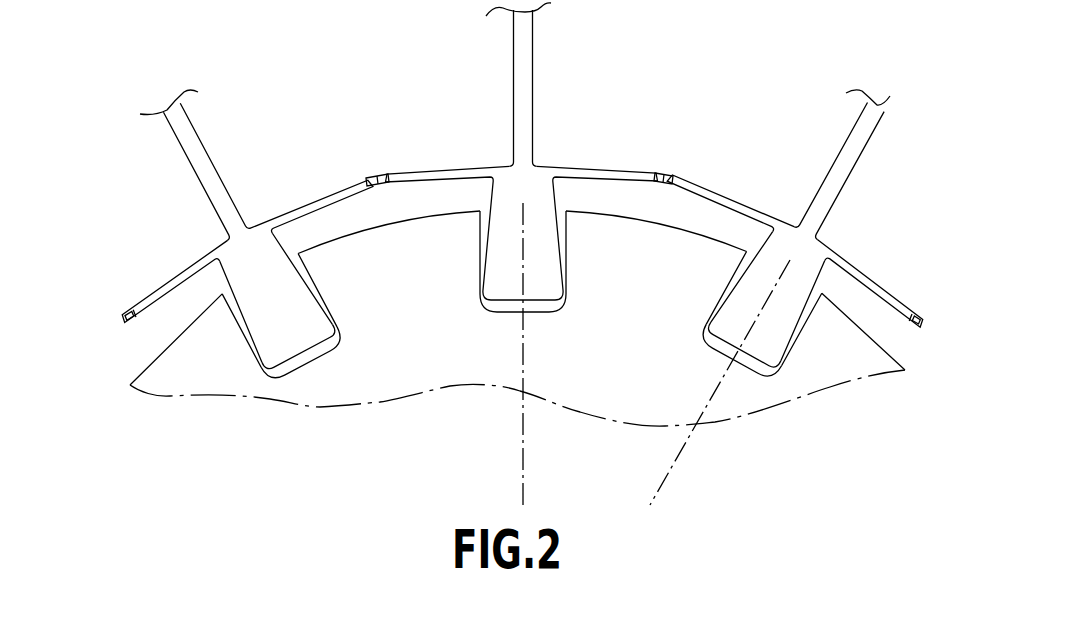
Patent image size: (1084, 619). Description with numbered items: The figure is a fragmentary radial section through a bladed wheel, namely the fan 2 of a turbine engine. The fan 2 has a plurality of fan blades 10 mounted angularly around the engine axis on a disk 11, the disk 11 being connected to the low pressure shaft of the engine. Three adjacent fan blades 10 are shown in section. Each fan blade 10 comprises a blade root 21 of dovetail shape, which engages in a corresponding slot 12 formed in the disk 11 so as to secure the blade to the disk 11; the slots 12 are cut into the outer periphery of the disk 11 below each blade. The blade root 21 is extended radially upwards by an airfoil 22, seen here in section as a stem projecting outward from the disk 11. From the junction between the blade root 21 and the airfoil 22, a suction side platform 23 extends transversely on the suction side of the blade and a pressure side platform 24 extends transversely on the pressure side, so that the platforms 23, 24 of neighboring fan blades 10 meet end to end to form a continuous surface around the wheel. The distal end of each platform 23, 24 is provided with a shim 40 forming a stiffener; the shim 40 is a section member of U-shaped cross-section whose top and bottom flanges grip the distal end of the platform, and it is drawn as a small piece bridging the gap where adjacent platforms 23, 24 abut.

The fan 2 is at (690, 96).
The fan blade 10 is at (212, 144).
The disk 11 is at (205, 372).
The slot 12 is at (329, 353).
The blade root 21 is at (281, 337).
The airfoil 22 is at (186, 156).
The suction side platform 23 is at (313, 205).
The pressure side platform 24 is at (158, 292).
The shim 40 is at (386, 173).